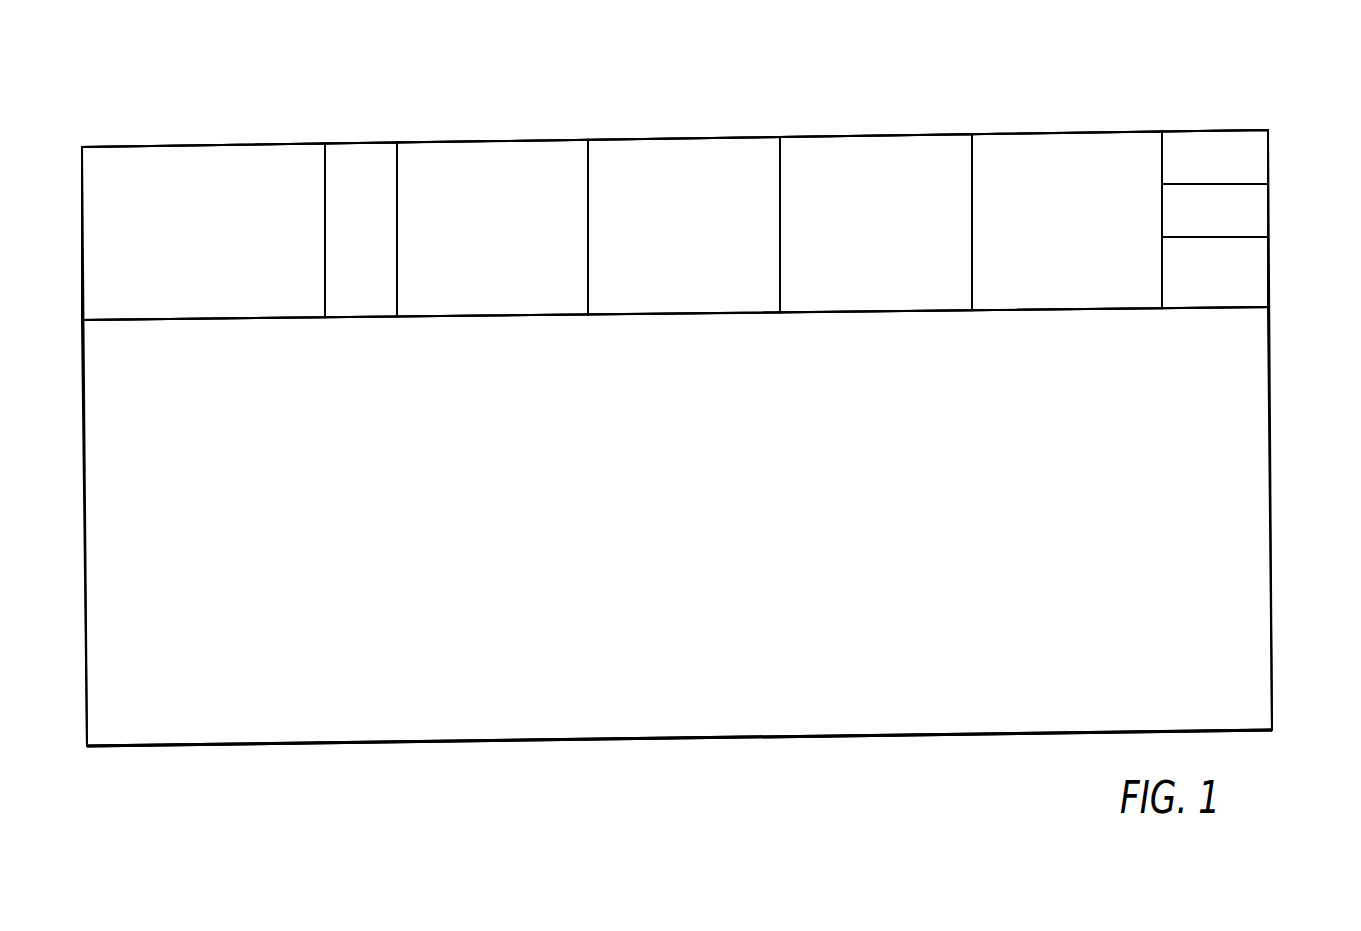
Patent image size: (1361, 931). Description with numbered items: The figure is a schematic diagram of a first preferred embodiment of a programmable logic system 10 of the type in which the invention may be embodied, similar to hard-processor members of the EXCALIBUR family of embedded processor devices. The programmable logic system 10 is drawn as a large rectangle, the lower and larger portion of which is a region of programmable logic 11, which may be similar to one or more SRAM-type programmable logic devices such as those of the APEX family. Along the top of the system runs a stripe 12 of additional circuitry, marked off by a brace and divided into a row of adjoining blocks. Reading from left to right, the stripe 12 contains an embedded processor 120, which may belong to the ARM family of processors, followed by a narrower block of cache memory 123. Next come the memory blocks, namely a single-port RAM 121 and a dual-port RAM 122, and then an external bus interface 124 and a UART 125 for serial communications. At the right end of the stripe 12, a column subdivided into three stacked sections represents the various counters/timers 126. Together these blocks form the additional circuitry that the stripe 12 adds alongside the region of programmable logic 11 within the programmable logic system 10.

The programmable logic system 10 is at (1290, 108).
The region of programmable logic 11 is at (691, 536).
The stripe 12 is at (72, 147).
The embedded processor 120 is at (224, 244).
The single-port RAM 121 is at (510, 238).
The dual-port RAM 122 is at (703, 238).
The cache memory 123 is at (379, 242).
The external bus interface 124 is at (894, 236).
The UART 125 is at (1088, 232).
The counters/timers 126 is at (1260, 153).